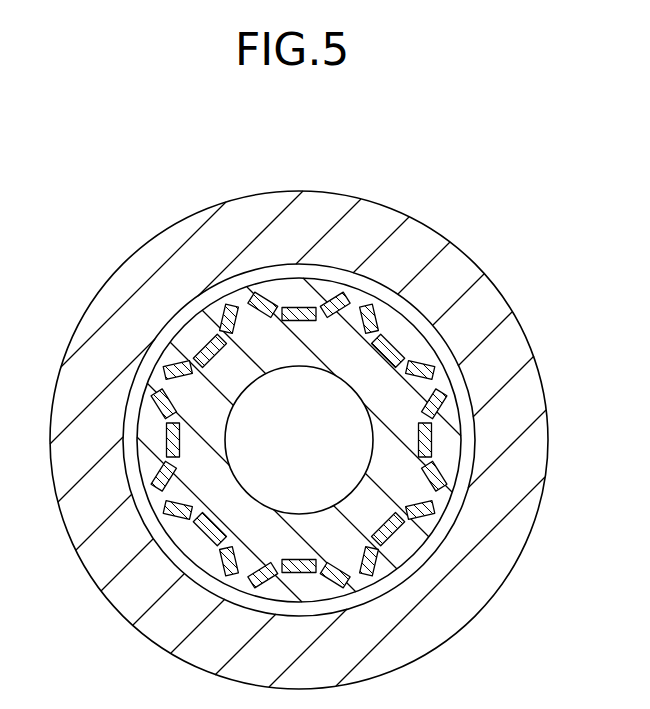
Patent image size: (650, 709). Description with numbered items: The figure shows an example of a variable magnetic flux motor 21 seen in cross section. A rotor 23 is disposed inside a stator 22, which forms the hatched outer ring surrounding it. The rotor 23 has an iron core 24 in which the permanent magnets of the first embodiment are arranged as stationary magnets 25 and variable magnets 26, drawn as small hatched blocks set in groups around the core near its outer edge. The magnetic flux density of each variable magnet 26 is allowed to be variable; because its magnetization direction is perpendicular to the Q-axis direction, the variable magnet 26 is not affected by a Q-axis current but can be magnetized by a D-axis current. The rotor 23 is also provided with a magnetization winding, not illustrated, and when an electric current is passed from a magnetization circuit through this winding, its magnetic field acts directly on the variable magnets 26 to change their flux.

The variable magnetic flux motor 21 is at (493, 192).
The stator 22 is at (533, 523).
The rotor 23 is at (525, 247).
The iron core 24 is at (415, 357).
The stationary magnet 25 is at (433, 412).
The variable magnet 26 is at (450, 416).